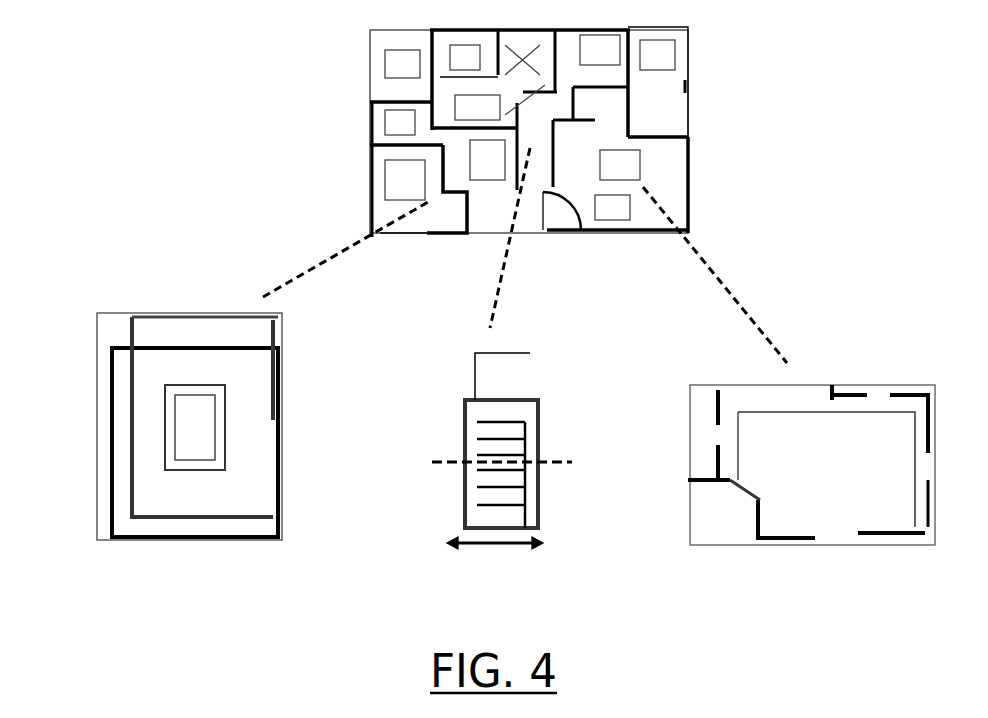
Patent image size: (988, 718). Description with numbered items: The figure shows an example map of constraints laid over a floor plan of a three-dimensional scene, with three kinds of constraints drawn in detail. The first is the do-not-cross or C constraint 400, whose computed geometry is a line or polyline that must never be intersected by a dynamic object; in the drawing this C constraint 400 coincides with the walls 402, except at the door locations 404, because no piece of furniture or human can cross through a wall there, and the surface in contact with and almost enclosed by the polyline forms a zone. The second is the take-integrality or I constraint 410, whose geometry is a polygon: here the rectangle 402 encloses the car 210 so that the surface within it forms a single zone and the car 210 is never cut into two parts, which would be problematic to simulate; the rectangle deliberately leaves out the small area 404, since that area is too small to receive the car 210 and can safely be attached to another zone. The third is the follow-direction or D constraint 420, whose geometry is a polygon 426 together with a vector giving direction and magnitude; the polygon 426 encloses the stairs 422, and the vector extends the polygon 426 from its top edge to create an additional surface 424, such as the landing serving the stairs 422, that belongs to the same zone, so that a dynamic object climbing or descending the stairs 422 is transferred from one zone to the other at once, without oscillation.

The car 210 is at (185, 432).
The C constraint 400 is at (700, 375).
The walls 402 is at (112, 415).
The door locations 404 is at (446, 212).
The I constraint 410 is at (420, 400).
The D constraint 420 is at (480, 431).
The stairs 422 is at (443, 472).
The additional surface 424 is at (503, 378).
The polygon 426 is at (460, 395).